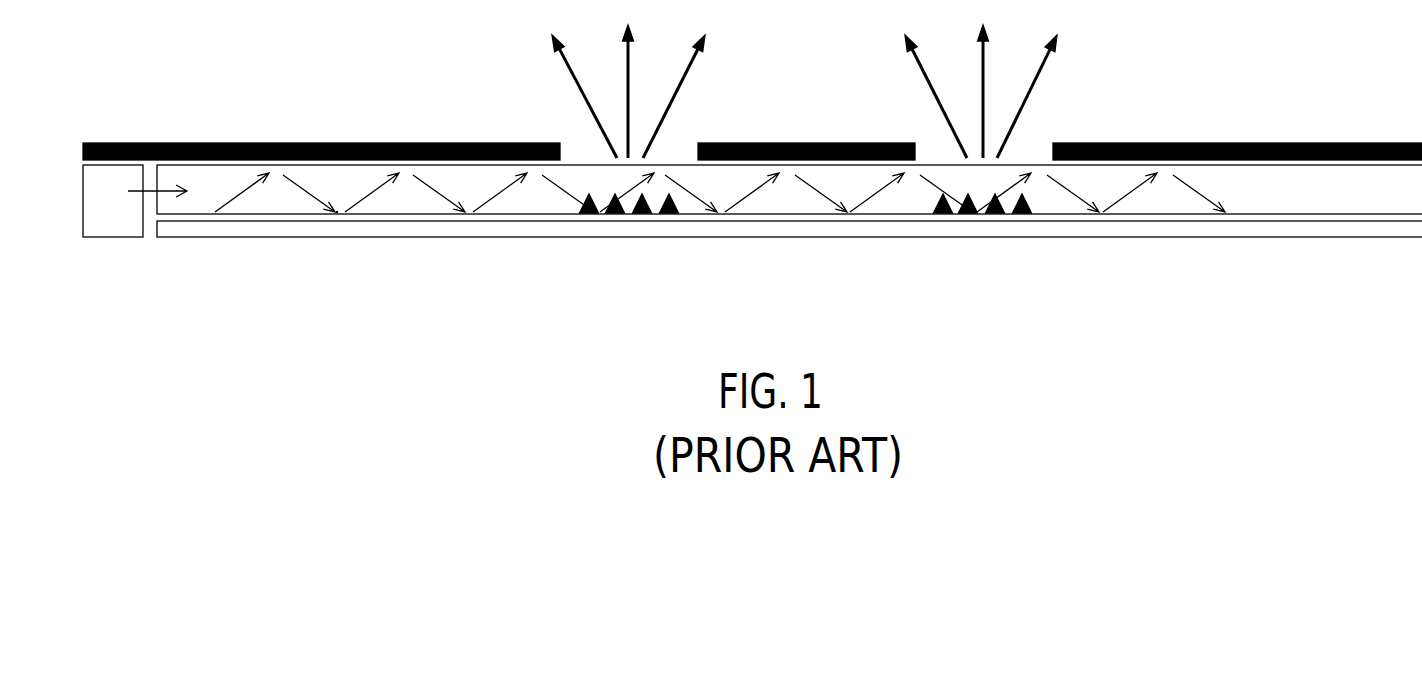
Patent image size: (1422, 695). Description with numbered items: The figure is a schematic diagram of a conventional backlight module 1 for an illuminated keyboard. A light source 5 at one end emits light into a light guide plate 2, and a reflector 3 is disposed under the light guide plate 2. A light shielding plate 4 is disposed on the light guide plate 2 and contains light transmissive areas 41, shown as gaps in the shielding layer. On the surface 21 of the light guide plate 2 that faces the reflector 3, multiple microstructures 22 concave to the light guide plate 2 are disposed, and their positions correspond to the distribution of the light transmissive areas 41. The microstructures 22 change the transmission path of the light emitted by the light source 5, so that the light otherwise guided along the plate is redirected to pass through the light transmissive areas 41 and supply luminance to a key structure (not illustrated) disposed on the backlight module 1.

The backlight module 1 is at (208, 110).
The light guide plate 2 is at (275, 203).
The surface 21 is at (337, 214).
The microstructures 22 is at (680, 213).
The reflector 3 is at (450, 228).
The light shielding plate 4 is at (355, 143).
The light transmissive areas 41 is at (678, 143).
The light source 5 is at (113, 225).